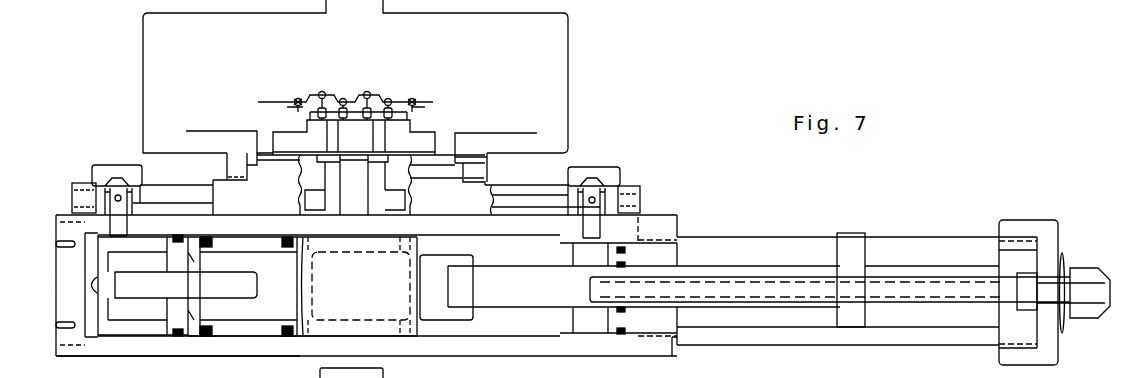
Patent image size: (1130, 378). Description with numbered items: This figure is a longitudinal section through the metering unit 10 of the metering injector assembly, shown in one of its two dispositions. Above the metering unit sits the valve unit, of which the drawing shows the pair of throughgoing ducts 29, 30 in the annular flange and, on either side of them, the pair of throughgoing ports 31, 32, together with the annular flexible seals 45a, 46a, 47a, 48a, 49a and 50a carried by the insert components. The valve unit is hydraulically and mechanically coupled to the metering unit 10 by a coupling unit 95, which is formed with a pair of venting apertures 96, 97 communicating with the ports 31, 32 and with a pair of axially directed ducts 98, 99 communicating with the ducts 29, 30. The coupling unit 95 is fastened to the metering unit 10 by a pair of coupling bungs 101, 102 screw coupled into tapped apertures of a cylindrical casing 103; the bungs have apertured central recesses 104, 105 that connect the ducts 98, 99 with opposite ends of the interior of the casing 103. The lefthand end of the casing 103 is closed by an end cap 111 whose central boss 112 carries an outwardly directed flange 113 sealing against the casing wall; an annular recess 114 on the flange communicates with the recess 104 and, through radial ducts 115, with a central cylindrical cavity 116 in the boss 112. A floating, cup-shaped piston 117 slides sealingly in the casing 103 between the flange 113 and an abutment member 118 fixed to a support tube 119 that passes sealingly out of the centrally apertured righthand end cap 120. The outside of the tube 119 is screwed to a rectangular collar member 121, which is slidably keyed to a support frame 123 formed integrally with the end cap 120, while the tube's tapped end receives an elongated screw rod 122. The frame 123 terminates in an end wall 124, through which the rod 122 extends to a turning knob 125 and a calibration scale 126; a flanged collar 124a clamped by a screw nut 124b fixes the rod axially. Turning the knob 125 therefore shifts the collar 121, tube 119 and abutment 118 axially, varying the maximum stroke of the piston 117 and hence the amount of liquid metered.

The metering unit 10 is at (740, 233).
The throughgoing duct 29 is at (330, 144).
The throughgoing duct 30 is at (378, 144).
The throughgoing port 31 is at (267, 144).
The throughgoing port 32 is at (455, 145).
The annular flexible seal 45a is at (299, 98).
The flexible annular seal 46a is at (322, 91).
The flexible annular seal 47a is at (348, 90).
The flexible annular seal 48a is at (367, 91).
The flexible annular seal 49a is at (389, 98).
The flexible annular seal 50a is at (413, 98).
The coupling unit 95 is at (628, 178).
The venting aperture 96 is at (225, 168).
The venting aperture 97 is at (485, 171).
The axially directed duct 98 is at (183, 198).
The axially directed duct 99 is at (522, 197).
The coupling bung 101 is at (112, 172).
The coupling bung 102 is at (598, 168).
The cylindrical casing 103 is at (131, 343).
The apertured central recess 104 is at (115, 218).
The apertured central recess 105 is at (593, 236).
The end cap 111 is at (73, 303).
The central boss 112 is at (148, 323).
The outwardly directed flange 113 is at (180, 325).
The annular recess 114 is at (125, 248).
The radial ducts 115 is at (103, 268).
The cylindrical cavity 116 is at (227, 292).
The floating cup-shaped piston 117 is at (380, 330).
The abutment member 118 is at (438, 310).
The support tube 119 is at (512, 305).
The end cap 120 is at (665, 323).
The collar member 121 is at (846, 242).
The screw rod 122 is at (915, 288).
The support frame 123 is at (832, 332).
The end wall 124 is at (1037, 225).
The flanged collar 124a is at (1030, 303).
The screw nut 124b is at (1028, 257).
The turning knob 125 is at (1098, 308).
The calibration scale 126 is at (1063, 267).